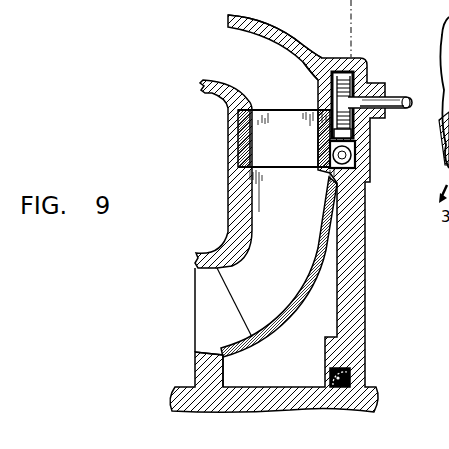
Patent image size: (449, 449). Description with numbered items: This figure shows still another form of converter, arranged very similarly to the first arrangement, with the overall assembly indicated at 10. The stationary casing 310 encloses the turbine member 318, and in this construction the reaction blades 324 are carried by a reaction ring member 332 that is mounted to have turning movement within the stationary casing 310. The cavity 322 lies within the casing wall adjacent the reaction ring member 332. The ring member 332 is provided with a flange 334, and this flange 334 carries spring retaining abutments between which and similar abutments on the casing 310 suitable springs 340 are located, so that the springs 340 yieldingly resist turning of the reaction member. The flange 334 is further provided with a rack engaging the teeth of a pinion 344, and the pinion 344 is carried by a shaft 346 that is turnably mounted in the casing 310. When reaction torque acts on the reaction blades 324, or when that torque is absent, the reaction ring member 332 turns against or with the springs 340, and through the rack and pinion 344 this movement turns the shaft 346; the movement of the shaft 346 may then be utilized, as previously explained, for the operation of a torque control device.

The housing 10 is at (337, 23).
The stationary casing 310 is at (279, 28).
The turbine member 318 is at (226, 364).
The cavity 322 is at (296, 231).
The reaction blades 324 is at (299, 141).
The reaction ring member 332 is at (316, 125).
The flange 334 is at (355, 137).
The springs 340 is at (350, 154).
The pinion 344 is at (310, 80).
The shaft 346 is at (406, 98).